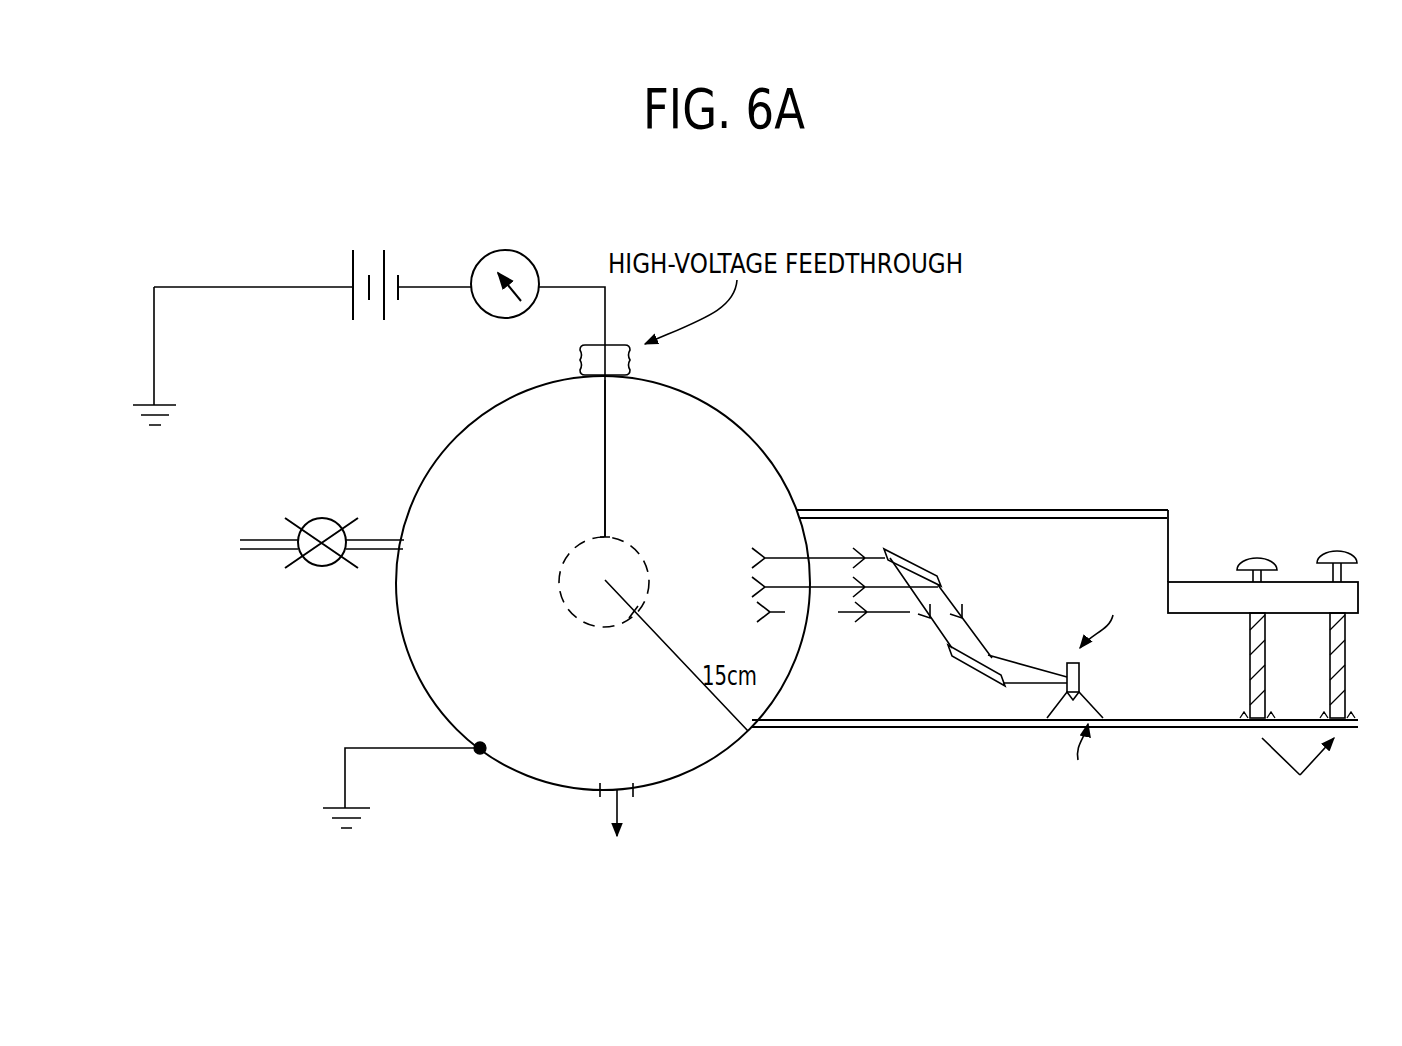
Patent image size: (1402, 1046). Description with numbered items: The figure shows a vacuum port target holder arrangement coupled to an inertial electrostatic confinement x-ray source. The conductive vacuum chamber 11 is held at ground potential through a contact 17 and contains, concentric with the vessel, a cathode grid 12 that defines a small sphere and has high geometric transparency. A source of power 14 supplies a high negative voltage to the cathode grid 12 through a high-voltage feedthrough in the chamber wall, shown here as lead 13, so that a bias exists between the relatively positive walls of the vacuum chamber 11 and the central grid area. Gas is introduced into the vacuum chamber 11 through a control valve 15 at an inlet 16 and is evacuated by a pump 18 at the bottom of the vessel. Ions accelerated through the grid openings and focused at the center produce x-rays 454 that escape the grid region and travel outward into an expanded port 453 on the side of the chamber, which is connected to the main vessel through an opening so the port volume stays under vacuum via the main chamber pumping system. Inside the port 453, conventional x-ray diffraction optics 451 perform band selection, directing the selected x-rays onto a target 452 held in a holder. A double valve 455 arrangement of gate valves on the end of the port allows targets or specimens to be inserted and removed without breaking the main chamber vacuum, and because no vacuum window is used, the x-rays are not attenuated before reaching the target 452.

The vacuum chamber 11 is at (758, 425).
The cathode grid 12 is at (636, 537).
The high-voltage lead 13 is at (605, 440).
The source of power 14 is at (371, 378).
The control valve 15 is at (299, 526).
The gas inlet port 16 is at (408, 532).
The contact 17 is at (416, 769).
The pump 18 is at (616, 833).
The x-ray diffraction optics 451 is at (814, 522).
The target 452 is at (1012, 758).
The expanded port 453 is at (1050, 728).
The x-ray beam 454 is at (788, 615).
The double valve 455 is at (1293, 567).